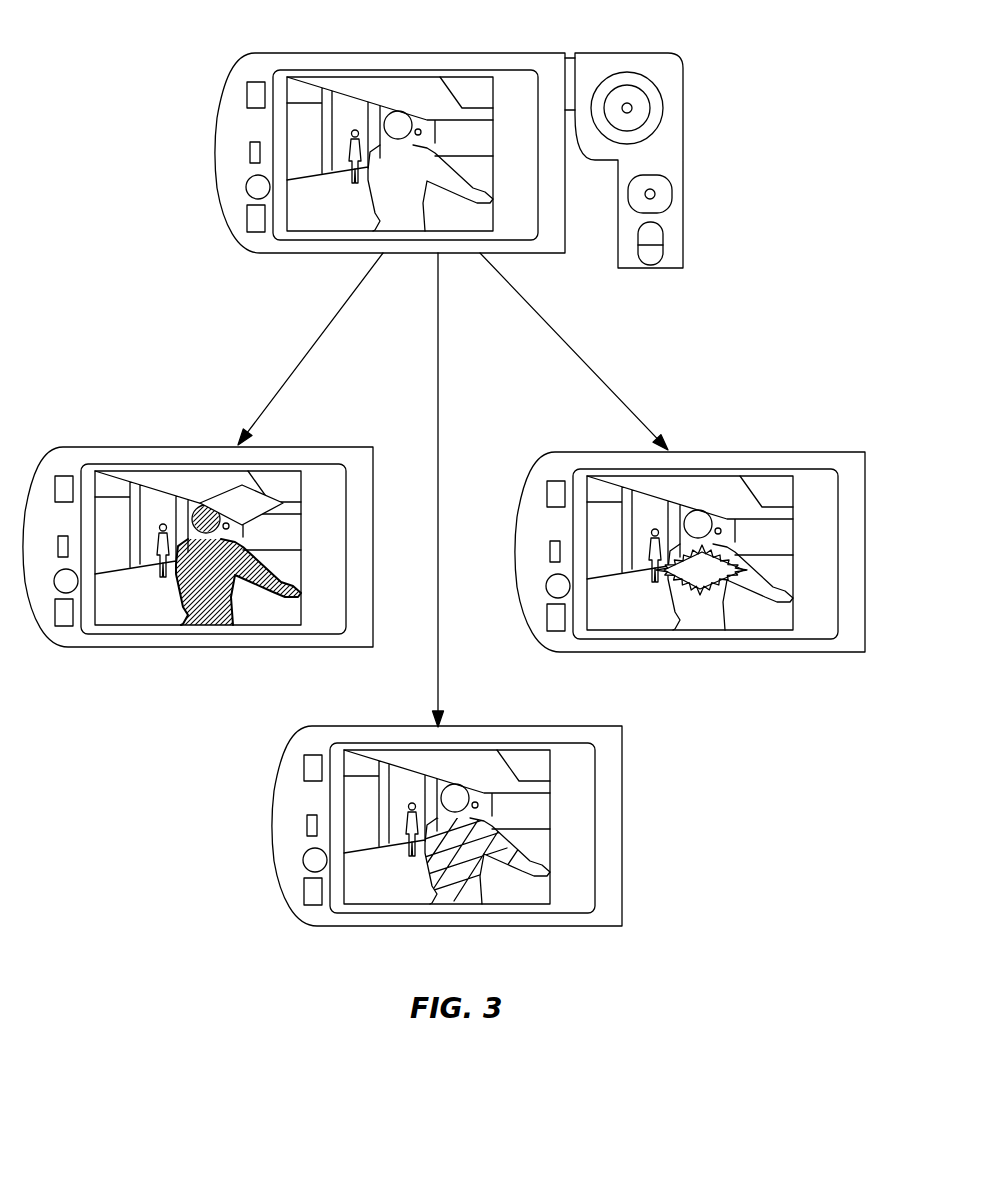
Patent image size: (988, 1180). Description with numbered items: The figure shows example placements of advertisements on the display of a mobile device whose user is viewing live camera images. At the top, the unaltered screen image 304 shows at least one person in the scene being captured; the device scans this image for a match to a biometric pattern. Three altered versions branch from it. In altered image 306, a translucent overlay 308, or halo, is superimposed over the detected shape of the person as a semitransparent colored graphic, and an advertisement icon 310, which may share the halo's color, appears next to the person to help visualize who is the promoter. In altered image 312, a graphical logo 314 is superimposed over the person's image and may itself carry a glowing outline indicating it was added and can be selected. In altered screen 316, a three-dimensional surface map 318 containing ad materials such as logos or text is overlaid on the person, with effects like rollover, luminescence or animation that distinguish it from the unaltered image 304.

The screen image 304 is at (390, 154).
The altered image 306 is at (198, 548).
The translucent overlay 308 is at (238, 592).
The advertisement icon 310 is at (271, 467).
The altered image 312 is at (690, 553).
The graphical logo 314 is at (729, 617).
The altered screen 316 is at (447, 827).
The 3-D surface map 318 is at (496, 881).